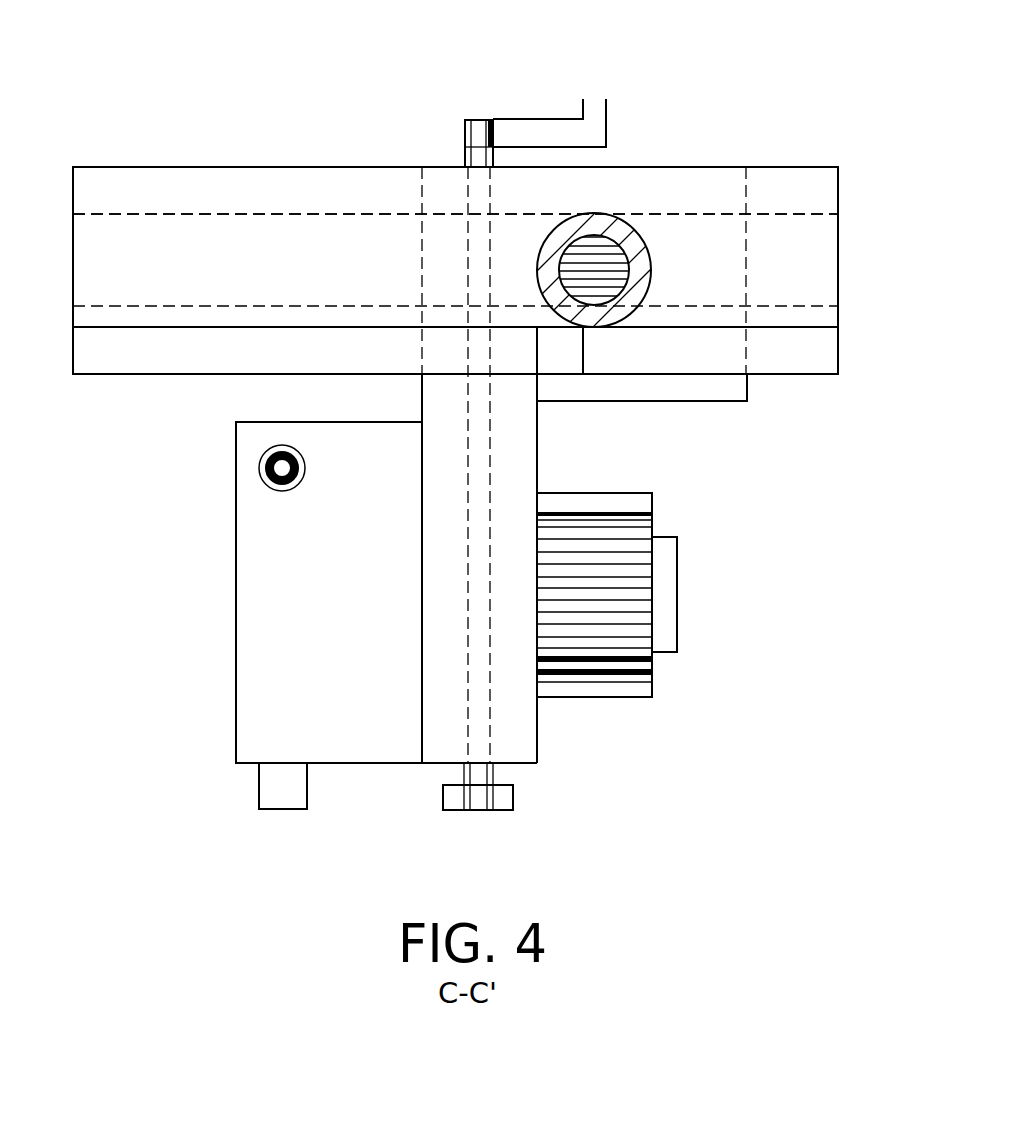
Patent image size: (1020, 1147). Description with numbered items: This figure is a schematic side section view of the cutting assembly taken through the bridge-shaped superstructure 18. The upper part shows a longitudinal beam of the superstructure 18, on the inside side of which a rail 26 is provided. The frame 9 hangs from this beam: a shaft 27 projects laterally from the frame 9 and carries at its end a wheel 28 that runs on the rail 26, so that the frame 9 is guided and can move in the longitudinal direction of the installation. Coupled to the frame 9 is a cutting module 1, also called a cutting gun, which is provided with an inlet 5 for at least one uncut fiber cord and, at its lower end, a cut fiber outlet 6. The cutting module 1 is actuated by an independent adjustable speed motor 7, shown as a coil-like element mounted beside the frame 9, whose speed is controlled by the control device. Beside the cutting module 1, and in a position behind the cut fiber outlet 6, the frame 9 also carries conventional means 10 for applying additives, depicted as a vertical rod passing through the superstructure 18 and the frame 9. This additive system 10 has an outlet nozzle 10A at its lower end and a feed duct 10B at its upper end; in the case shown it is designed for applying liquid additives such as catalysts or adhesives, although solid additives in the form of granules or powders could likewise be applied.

The cutting module 1 is at (300, 588).
The inlet 5 is at (280, 468).
The cut fiber outlet 6 is at (282, 783).
The motor 7 is at (567, 622).
The frame 9 is at (495, 425).
The means for applying additives 10 is at (467, 635).
The outlet nozzle 10A is at (495, 810).
The feed duct 10B is at (465, 145).
The superstructure 18 is at (690, 167).
The rail 26 is at (206, 273).
The shaft 27 is at (594, 263).
The wheel 28 is at (652, 285).